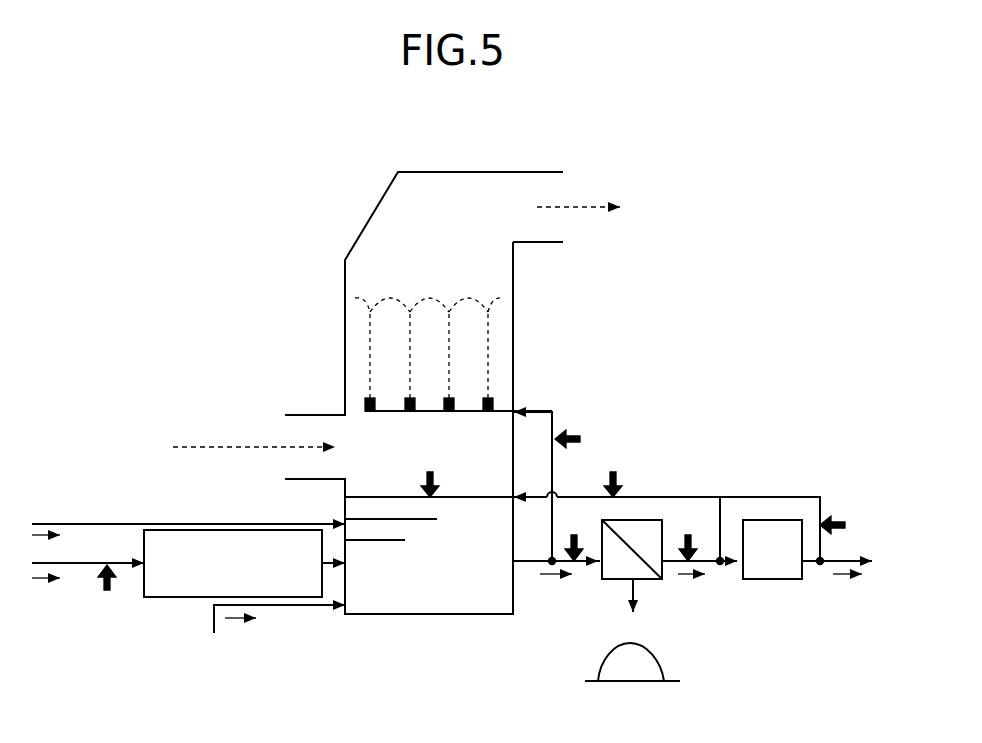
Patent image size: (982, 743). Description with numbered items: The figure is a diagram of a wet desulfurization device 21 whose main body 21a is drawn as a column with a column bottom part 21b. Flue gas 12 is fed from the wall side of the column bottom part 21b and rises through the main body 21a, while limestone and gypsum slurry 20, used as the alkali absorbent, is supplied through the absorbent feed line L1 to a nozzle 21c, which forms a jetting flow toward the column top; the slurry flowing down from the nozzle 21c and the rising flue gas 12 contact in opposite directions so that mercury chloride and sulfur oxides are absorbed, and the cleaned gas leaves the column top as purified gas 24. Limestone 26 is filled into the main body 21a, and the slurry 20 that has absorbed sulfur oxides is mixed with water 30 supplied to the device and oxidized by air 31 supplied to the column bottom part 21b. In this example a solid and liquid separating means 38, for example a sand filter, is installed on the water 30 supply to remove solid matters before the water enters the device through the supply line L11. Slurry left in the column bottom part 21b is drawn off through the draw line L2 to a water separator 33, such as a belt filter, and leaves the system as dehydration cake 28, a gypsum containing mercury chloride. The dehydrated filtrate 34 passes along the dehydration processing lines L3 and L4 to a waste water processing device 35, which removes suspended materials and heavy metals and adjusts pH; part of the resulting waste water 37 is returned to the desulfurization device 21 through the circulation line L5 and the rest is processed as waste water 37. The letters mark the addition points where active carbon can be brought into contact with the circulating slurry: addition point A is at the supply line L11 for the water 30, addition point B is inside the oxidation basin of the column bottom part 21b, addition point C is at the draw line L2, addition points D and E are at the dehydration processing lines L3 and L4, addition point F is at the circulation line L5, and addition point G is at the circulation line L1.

The wet desulfurization device 21 is at (505, 148).
The main body of the device 21a is at (345, 277).
The column bottom part 21b is at (465, 615).
The nozzle 21c is at (495, 405).
The limestone and gypsum slurry 20 is at (489, 338).
The purified gas 24 is at (586, 205).
The flue gas 12 is at (222, 446).
The absorbent feed line L1 is at (553, 420).
The draw line L2 is at (584, 566).
The dehydration processing line L3 is at (714, 566).
The dehydration processing line L4 is at (725, 510).
The circulation line L5 is at (774, 497).
The supply line for the water L11 is at (129, 566).
The addition point A is at (98, 583).
The addition point B is at (430, 471).
The addition point C is at (574, 536).
The addition point D is at (687, 536).
The addition point E is at (843, 526).
The addition point F is at (613, 471).
The addition point G is at (579, 440).
The air 31 is at (42, 538).
The water 30 is at (44, 581).
The solid and liquid separating means 38 is at (200, 598).
The limestone 26 is at (237, 621).
The water separator 33 is at (648, 581).
The dehydrated filtrate 34 is at (690, 577).
The waste water processing device 35 is at (778, 581).
The waste water 37 is at (845, 577).
The dehydration cake (gypsum) 28 is at (661, 668).